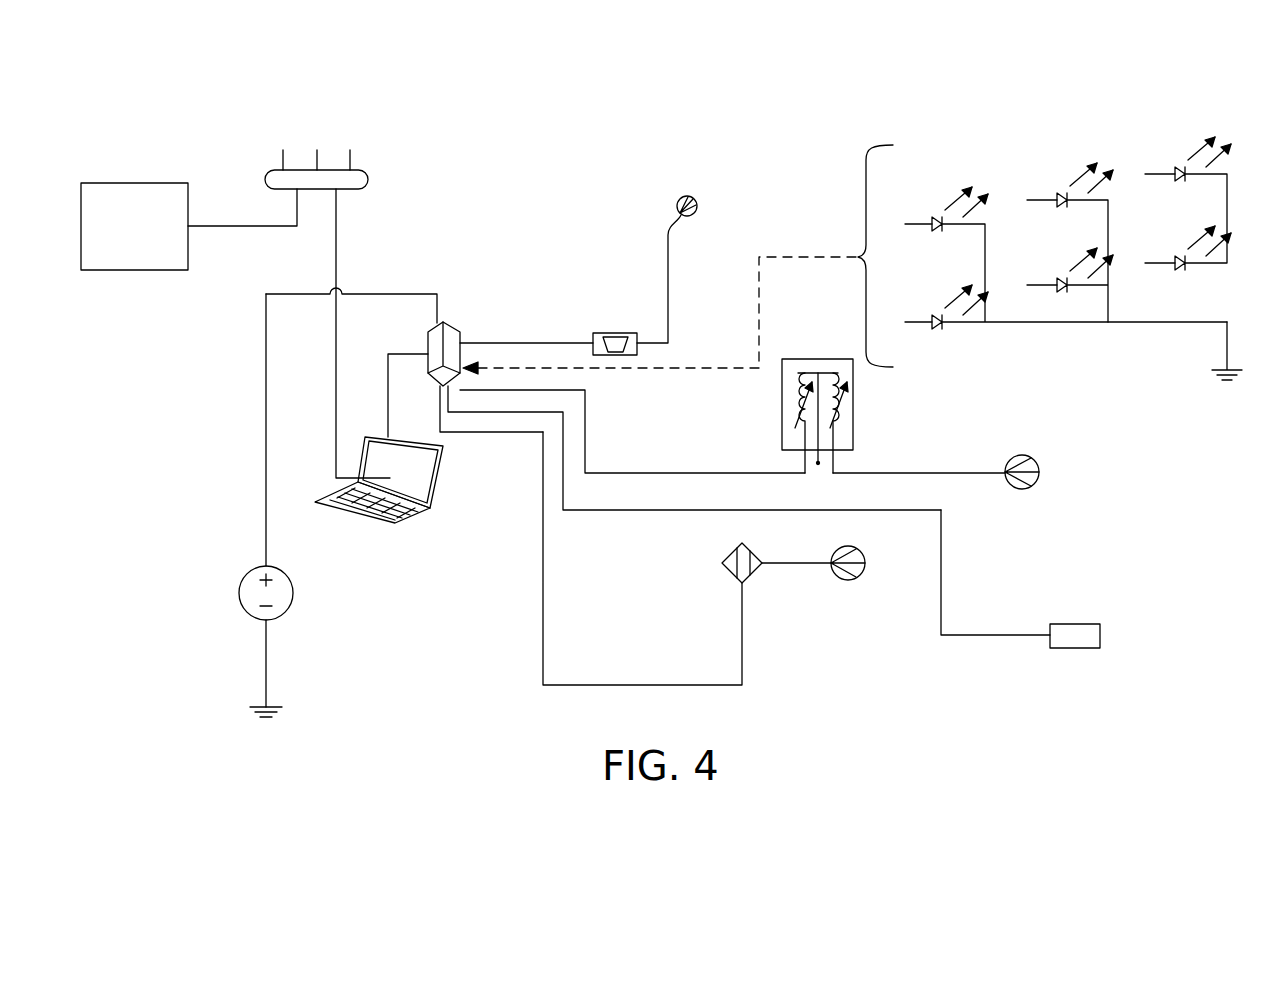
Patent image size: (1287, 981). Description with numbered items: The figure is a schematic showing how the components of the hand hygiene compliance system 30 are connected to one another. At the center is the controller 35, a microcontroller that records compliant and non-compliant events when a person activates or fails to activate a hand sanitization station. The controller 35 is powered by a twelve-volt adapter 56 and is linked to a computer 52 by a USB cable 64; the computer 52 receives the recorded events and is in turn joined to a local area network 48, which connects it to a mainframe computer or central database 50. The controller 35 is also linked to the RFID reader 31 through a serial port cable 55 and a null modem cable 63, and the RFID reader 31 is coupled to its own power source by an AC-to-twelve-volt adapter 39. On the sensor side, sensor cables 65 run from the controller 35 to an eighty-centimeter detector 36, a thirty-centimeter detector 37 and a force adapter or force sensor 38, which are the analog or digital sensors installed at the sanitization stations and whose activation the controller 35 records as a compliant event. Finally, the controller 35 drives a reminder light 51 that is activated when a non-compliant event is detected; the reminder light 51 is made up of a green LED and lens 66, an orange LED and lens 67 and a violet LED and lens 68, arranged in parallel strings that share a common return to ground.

The system 30 is at (437, 675).
The RFID reader 31 is at (680, 198).
The controller 35 is at (446, 322).
The 80 cm detector 36 is at (853, 398).
The 30 cm detector 37 is at (722, 560).
The force adapter/force sensor 38 is at (1073, 624).
The AC-12 V adapter 39 is at (615, 333).
The local area network 48 is at (364, 178).
The central database 50 is at (131, 183).
The reminder light 51 is at (1050, 205).
The computer 52 is at (405, 523).
The serial port cable 55 is at (516, 343).
The 12 V adapter 56 is at (243, 580).
The null modem cable 63 is at (668, 290).
The USB cable 64 is at (388, 395).
The sensor cables 65 is at (543, 603).
The green LED/lens 66 is at (938, 222).
The orange LED/lens 67 is at (1062, 199).
The violet LED/lens 68 is at (1180, 173).